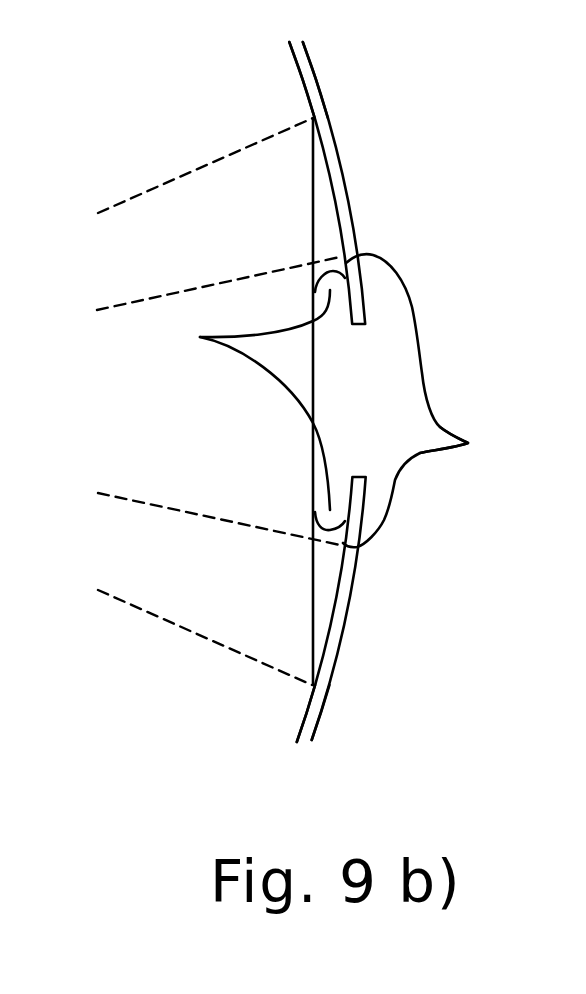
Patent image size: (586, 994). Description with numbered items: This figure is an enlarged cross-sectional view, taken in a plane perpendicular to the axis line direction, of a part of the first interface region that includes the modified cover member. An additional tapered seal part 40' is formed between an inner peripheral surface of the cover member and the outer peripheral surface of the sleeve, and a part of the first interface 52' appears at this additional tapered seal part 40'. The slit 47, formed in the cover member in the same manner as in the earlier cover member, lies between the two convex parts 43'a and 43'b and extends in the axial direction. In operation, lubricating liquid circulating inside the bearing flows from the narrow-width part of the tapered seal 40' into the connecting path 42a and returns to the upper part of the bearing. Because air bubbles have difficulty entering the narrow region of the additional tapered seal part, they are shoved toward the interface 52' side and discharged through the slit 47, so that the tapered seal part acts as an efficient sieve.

The additional tapered seal part 40' is at (227, 400).
The connecting path 42a is at (290, 230).
The convex part 43'a is at (401, 683).
The convex part 43'b is at (404, 126).
The slit 47 is at (367, 400).
The first interface 52' is at (495, 452).